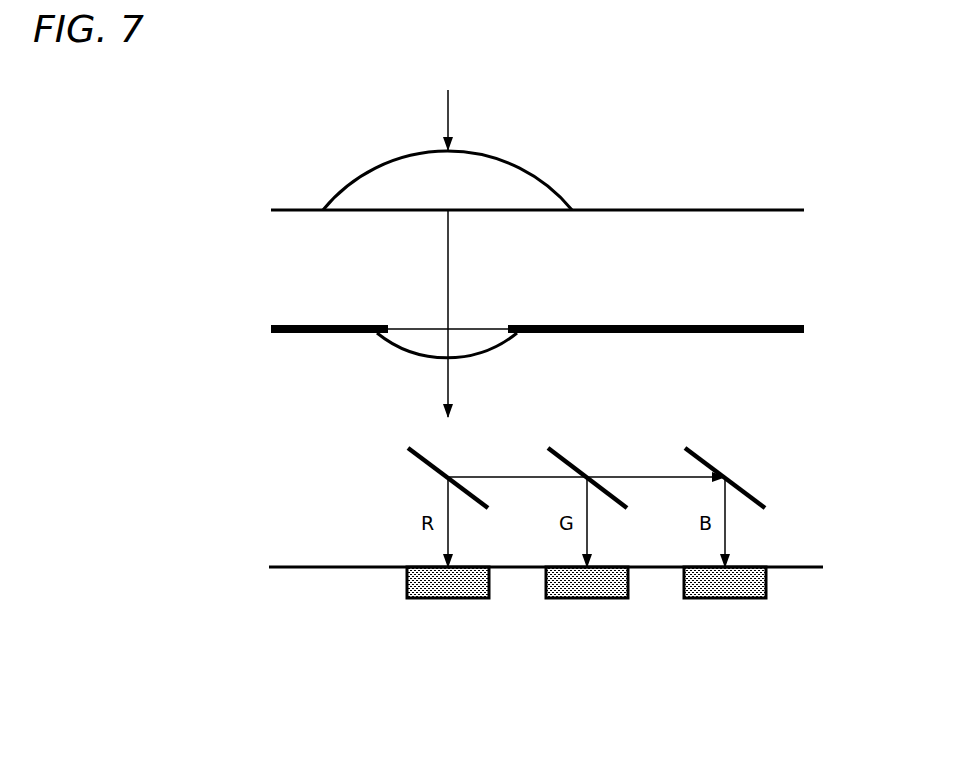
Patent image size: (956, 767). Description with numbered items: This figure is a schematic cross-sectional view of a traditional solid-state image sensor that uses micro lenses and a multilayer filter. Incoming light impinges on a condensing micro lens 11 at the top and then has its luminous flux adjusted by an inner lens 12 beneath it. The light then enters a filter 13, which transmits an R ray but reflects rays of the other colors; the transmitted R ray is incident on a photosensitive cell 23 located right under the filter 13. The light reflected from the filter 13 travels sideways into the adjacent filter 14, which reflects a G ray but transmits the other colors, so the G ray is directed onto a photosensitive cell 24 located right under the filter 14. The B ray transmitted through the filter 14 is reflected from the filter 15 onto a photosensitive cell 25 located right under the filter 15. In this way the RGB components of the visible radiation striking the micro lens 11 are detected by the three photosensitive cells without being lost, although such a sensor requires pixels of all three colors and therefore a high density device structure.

The condensing micro lens 11 is at (487, 180).
The inner lens 12 is at (470, 328).
The filter 13 is at (422, 449).
The filter 14 is at (572, 449).
The filter 15 is at (705, 449).
The photosensitive cell 23 is at (450, 598).
The photosensitive cell 24 is at (583, 598).
The photosensitive cell 25 is at (725, 598).